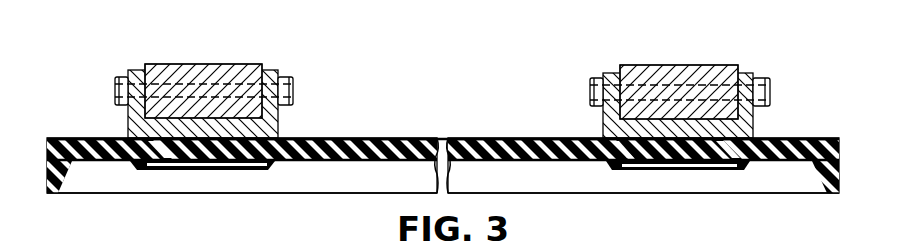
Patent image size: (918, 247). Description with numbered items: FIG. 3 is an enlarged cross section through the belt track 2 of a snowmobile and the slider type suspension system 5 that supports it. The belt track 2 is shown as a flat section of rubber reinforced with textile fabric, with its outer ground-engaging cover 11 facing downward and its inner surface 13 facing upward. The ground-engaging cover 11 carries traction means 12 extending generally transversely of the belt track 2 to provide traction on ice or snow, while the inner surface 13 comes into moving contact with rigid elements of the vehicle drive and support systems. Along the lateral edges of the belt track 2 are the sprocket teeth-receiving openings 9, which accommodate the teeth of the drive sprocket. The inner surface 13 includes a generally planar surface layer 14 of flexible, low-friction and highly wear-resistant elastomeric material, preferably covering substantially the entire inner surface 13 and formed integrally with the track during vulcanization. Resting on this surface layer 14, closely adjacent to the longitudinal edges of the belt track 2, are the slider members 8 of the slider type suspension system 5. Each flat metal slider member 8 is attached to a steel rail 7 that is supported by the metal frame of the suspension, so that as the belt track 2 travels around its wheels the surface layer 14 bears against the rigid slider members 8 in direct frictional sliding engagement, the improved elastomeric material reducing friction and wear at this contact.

The belt track 2 is at (448, 144).
The slider type suspension system 5 is at (449, 75).
The steel rail 7 is at (158, 67).
The slider member 8 is at (275, 123).
The sprocket teeth-receiving openings 9 is at (155, 143).
The ground-engaging cover 11 is at (317, 162).
The traction means 12 is at (577, 177).
The inner surface 13 is at (363, 138).
The surface layer 14 is at (413, 138).